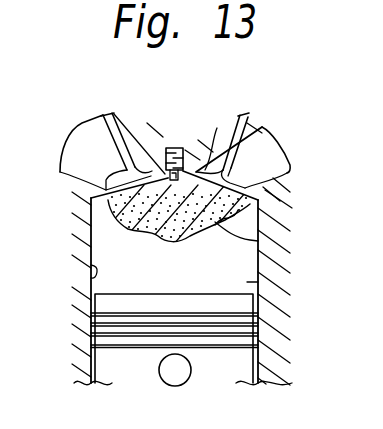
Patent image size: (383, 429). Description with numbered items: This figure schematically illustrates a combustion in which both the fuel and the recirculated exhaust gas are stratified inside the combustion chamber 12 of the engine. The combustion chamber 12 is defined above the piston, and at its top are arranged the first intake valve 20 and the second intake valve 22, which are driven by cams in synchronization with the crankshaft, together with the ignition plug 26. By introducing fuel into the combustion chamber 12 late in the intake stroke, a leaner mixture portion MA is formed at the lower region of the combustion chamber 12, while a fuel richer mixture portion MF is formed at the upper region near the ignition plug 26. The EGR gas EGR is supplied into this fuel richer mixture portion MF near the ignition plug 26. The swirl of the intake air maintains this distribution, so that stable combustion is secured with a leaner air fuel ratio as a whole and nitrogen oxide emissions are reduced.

The combustion chamber 12 is at (91, 277).
The first intake valve 20 is at (217, 128).
The second intake valve 22 is at (140, 140).
The ignition plug 26 is at (175, 148).
The EGR gas EGR is at (233, 212).
The fuel richer mixture portion MF is at (258, 241).
The leaner mixture portion MA is at (258, 282).